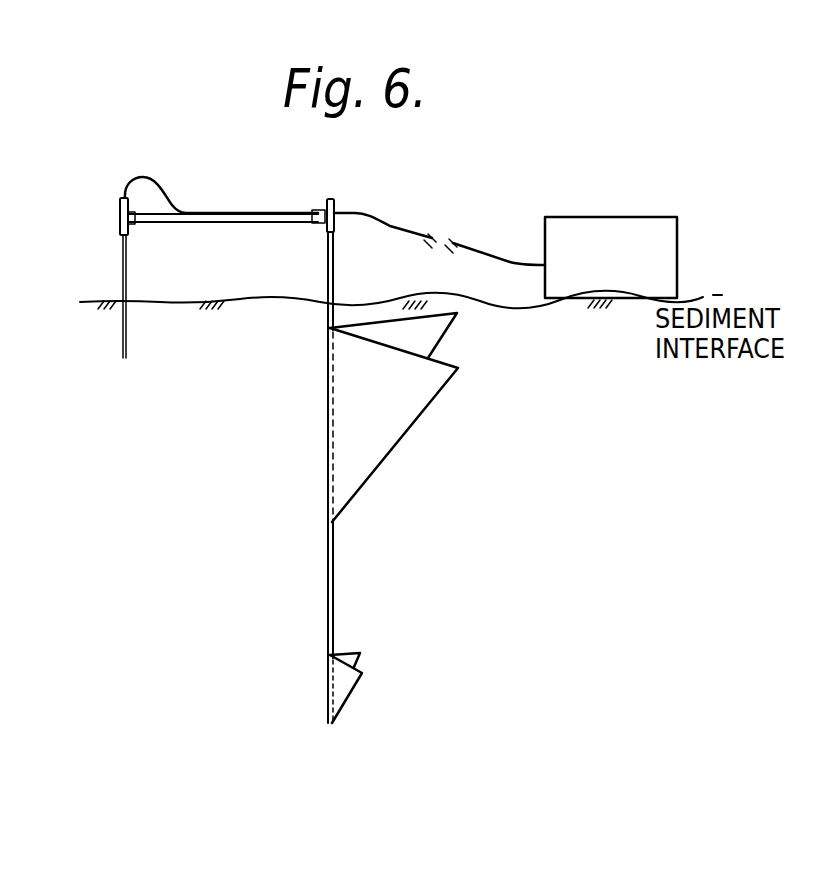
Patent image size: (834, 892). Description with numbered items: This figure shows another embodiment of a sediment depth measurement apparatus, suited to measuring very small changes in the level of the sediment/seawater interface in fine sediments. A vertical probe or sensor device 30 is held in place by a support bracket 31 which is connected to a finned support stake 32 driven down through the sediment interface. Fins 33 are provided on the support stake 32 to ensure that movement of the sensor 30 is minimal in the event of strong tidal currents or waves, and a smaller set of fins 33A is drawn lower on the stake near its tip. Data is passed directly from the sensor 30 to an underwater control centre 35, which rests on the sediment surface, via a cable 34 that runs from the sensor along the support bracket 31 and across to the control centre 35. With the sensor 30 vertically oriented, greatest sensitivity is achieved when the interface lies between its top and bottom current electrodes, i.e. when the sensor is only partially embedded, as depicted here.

The vertical probe or sensor device 30 is at (126, 315).
The support bracket 31 is at (232, 222).
The finned support stake 32 is at (335, 248).
The fins 33 is at (422, 400).
The lower anchor fin 33A is at (352, 680).
The cable 34 is at (172, 195).
The underwater control centre 35 is at (624, 269).